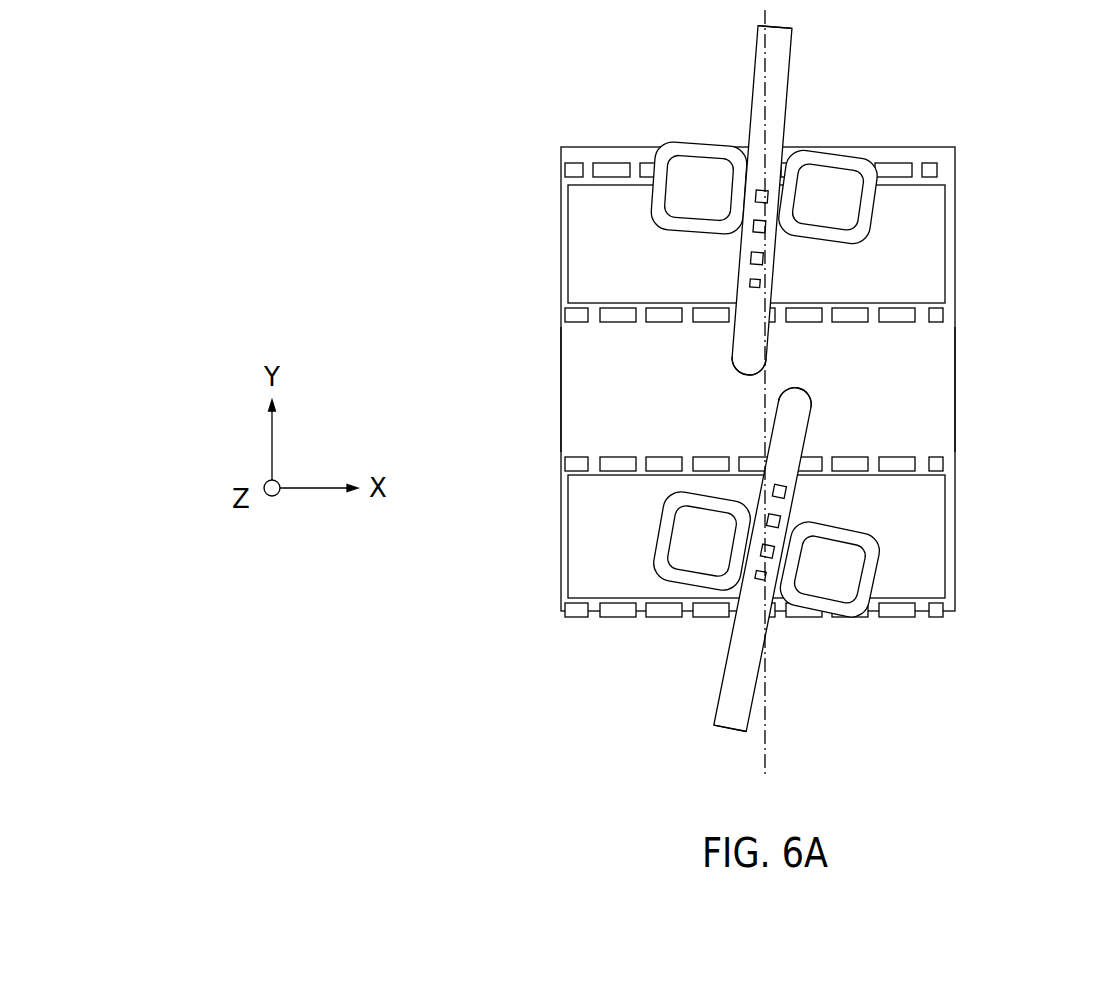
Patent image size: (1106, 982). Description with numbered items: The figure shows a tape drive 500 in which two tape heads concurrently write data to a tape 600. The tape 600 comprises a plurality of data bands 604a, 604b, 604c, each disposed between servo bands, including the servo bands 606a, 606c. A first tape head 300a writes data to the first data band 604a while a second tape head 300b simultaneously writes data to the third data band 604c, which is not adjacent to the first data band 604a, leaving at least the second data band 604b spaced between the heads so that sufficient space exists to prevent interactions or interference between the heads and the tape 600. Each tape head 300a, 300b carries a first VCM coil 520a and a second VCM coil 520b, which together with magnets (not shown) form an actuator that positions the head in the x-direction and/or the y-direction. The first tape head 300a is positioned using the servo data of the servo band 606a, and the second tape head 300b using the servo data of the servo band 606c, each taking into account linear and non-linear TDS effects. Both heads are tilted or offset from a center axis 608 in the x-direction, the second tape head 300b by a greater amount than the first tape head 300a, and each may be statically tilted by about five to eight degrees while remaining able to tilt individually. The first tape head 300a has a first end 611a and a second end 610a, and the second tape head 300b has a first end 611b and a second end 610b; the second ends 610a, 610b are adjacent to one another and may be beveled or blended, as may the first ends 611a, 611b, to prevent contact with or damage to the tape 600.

The tape drive 500 is at (521, 71).
The tape 600 is at (991, 197).
The first data band 604a is at (930, 285).
The second data band 604b is at (930, 439).
The third data band 604c is at (930, 510).
The servo band 606a is at (612, 170).
The servo band 606c is at (615, 463).
The first VCM coil 520a is at (701, 367).
The second VCM coil 520b is at (829, 384).
The first tape head 300a is at (762, 55).
The second tape head 300b is at (747, 650).
The second end 610a is at (750, 365).
The second end 610b is at (802, 398).
The first end 611a is at (782, 48).
The first end 611b is at (735, 715).
The center axis 608 is at (765, 762).